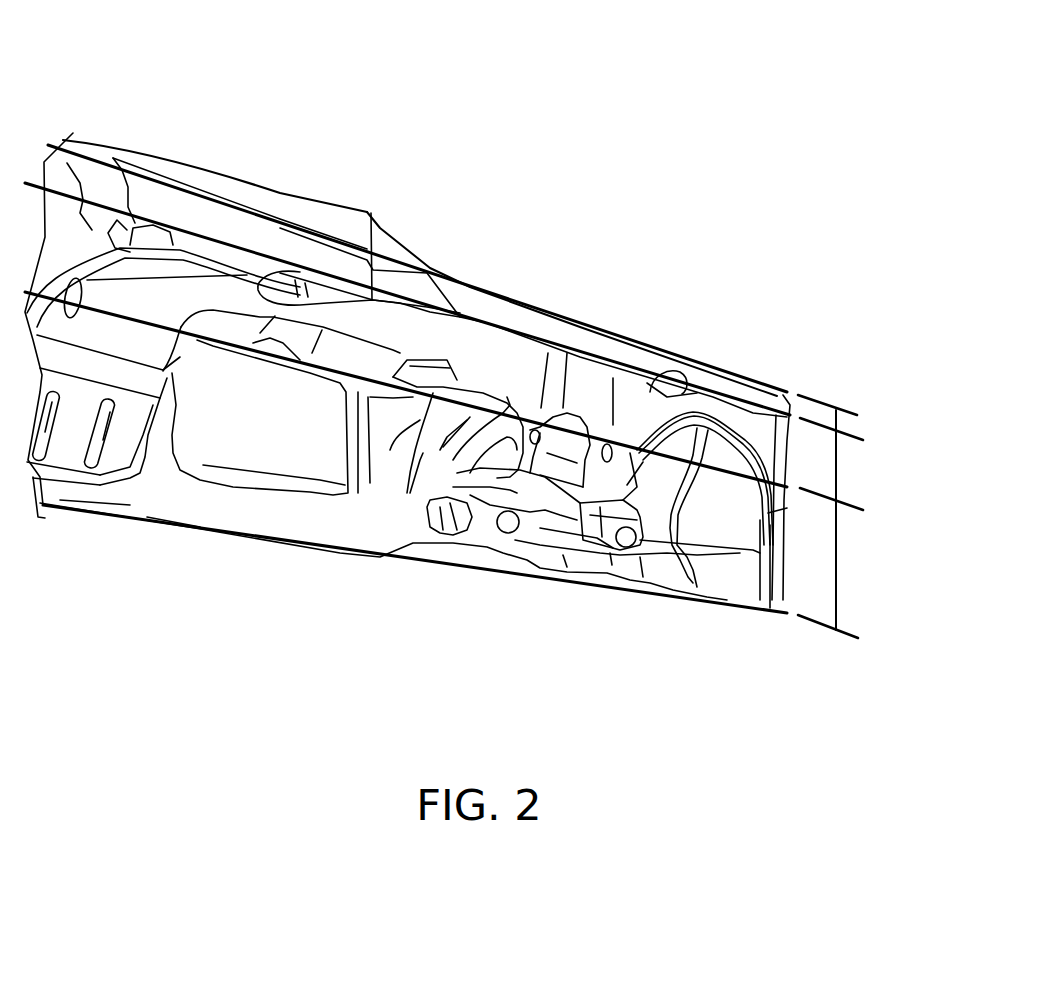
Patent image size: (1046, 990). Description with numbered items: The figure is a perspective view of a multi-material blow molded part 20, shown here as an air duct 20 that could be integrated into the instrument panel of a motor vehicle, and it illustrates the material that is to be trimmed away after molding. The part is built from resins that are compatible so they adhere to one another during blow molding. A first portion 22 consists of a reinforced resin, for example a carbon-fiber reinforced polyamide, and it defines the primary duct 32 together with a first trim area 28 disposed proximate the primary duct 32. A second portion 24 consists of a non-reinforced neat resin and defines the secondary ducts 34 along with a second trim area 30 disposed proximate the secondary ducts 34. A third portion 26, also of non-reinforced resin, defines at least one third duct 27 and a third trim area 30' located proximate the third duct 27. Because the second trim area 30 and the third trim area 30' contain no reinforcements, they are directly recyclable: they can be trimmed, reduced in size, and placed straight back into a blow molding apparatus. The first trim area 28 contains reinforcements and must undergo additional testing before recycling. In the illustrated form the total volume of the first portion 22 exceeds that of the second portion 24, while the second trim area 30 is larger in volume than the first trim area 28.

The multi-material blow molded part 20 is at (720, 190).
The first portion 22 is at (852, 468).
The second portion 24 is at (850, 582).
The third portion 26 is at (857, 426).
The third duct 27 is at (538, 328).
The first trim area 28 is at (63, 223).
The second trim area 30 is at (468, 504).
The third trim area 30' is at (359, 185).
The primary duct 32 is at (157, 293).
The secondary ducts 34 is at (118, 395).